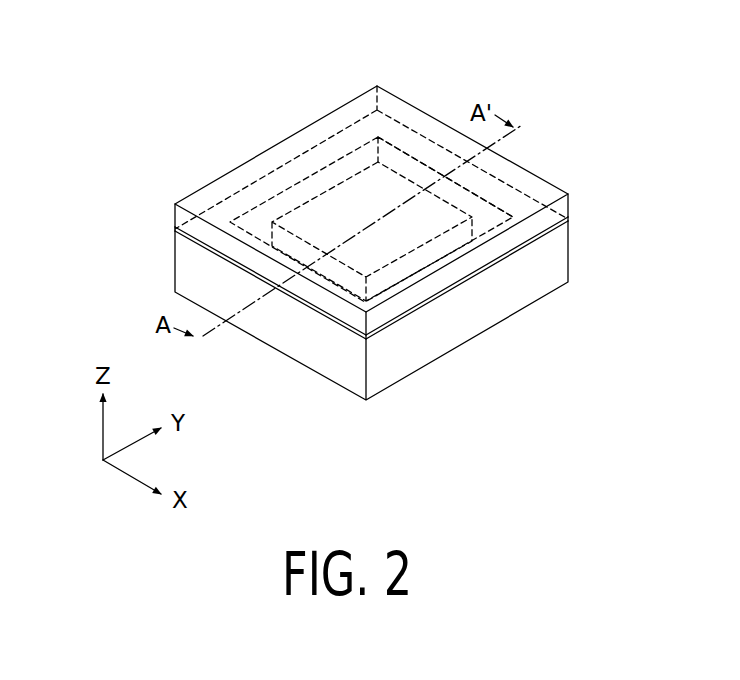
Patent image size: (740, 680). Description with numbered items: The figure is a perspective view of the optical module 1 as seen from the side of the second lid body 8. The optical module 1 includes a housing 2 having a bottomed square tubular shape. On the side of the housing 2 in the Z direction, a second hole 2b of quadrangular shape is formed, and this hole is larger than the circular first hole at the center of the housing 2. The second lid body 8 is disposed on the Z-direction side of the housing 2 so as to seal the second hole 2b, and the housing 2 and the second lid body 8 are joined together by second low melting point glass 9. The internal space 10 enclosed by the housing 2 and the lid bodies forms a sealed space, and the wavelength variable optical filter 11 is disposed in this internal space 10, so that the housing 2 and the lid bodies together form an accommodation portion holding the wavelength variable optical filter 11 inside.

The optical module 1 is at (396, 200).
The housing 2 is at (569, 258).
The second hole 2b is at (407, 168).
The second lid body 8 is at (569, 200).
The second low melting point glass 9 is at (569, 218).
The internal space 10 is at (490, 202).
The wavelength variable optical filter 11 is at (357, 222).